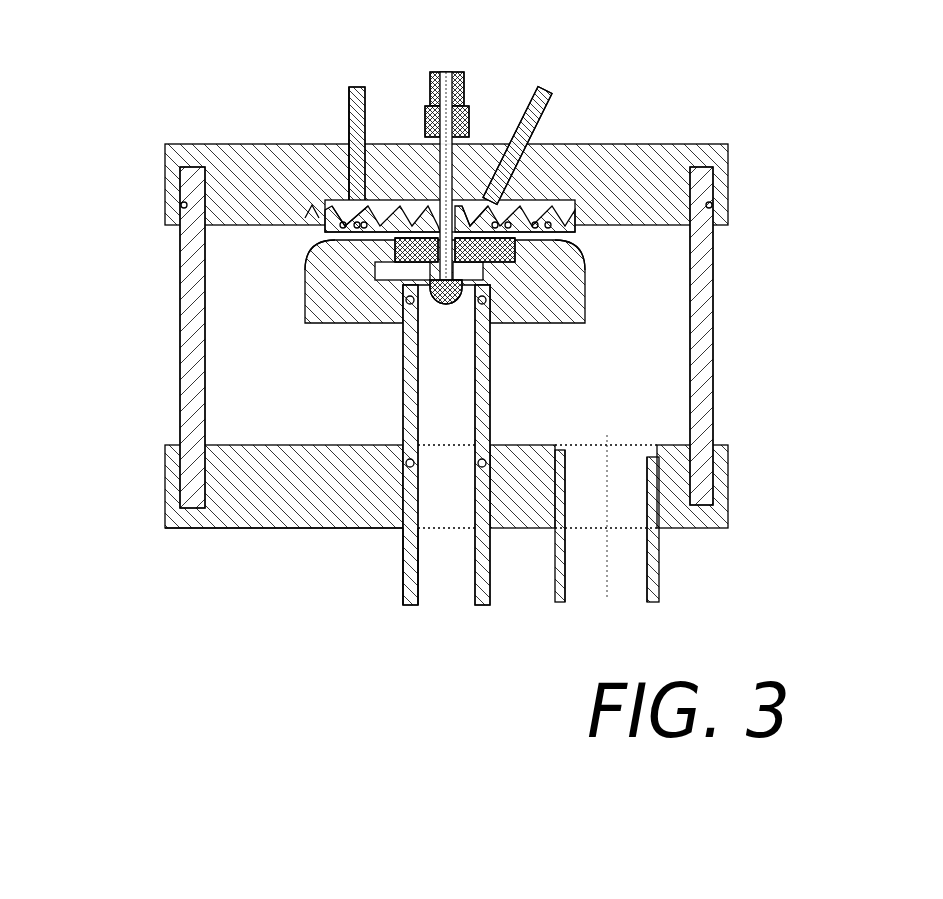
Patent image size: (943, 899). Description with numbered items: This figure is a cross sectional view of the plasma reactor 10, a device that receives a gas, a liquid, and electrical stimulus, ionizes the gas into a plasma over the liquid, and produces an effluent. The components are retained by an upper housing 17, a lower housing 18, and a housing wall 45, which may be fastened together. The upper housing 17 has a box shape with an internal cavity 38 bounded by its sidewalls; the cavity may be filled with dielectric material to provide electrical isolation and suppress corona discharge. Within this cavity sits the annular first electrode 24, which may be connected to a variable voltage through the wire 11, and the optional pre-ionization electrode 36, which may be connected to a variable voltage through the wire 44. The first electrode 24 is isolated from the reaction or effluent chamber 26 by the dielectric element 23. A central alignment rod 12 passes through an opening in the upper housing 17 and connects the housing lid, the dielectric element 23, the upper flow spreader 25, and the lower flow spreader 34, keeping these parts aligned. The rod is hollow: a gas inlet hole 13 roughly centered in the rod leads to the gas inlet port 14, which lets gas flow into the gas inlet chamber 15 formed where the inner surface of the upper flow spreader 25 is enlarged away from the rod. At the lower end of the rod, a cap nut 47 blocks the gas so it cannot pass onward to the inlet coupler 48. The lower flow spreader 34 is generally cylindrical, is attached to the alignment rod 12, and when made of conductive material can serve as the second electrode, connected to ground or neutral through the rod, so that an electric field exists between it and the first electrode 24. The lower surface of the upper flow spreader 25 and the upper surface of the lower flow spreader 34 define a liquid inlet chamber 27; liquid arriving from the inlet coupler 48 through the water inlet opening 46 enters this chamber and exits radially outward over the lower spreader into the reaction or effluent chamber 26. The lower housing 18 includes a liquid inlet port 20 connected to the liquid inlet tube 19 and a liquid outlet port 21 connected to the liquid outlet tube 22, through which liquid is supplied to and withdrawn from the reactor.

The plasma reactor 10 is at (113, 32).
The wire 11 is at (318, 101).
The alignment rod 12 is at (403, 157).
The gas inlet hole 13 is at (412, 68).
The gas inlet port 14 is at (403, 227).
The gas inlet chamber 15 is at (446, 244).
The upper housing 17 is at (148, 156).
The lower housing 18 is at (146, 461).
The liquid inlet tube 19 is at (365, 558).
The liquid inlet port 20 is at (405, 480).
The liquid outlet port 21 is at (570, 453).
The liquid outlet tube 22 is at (624, 519).
The dielectric element 23 is at (544, 206).
The first electrode 24 is at (298, 213).
The upper flow spreader 25 is at (477, 245).
The reaction or effluent chamber 26 is at (604, 268).
The liquid inlet chamber 27 is at (437, 239).
The lower flow spreader 34 is at (283, 249).
The pre-ionization electrode 36 is at (472, 218).
The internal cavity 38 is at (338, 207).
The wire 44 is at (548, 118).
The housing wall 45 is at (674, 245).
The water inlet opening 46 is at (383, 280).
The cap nut 47 is at (441, 299).
The inlet coupler 48 is at (464, 375).